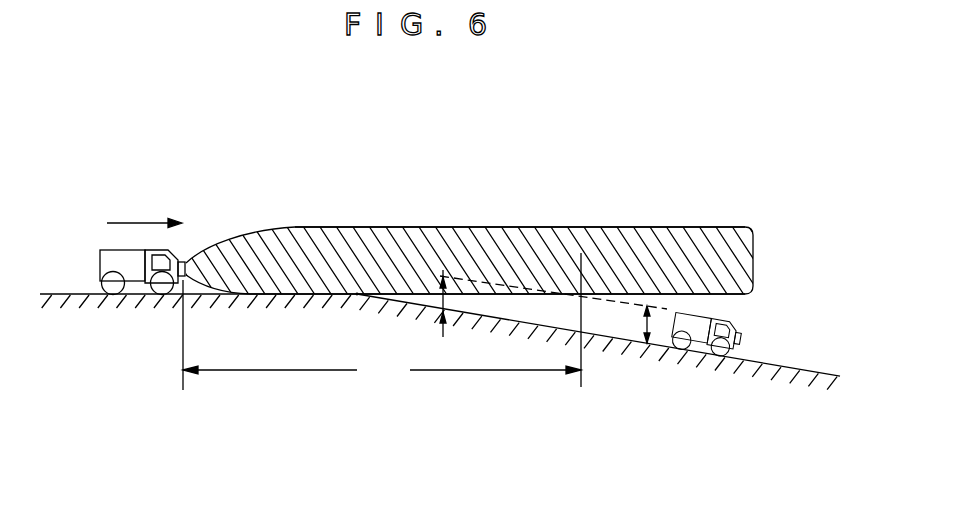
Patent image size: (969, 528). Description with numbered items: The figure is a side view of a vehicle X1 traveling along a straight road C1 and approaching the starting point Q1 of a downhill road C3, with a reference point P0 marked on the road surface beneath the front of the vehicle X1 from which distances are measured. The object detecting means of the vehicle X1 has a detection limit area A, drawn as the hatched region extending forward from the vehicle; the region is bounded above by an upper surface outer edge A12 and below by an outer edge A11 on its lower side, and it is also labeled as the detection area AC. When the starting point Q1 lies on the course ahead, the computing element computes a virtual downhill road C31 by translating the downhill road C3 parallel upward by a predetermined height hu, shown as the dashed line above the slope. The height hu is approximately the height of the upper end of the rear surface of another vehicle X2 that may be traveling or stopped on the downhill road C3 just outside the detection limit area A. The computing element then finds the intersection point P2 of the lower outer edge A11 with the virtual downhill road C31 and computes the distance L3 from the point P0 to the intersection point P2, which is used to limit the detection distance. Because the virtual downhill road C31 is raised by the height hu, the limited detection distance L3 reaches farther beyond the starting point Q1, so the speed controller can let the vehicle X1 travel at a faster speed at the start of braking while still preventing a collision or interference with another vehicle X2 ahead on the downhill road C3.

The straight road C1 is at (63, 294).
The vehicle X1 is at (138, 281).
The reference point on road surface P0 is at (186, 297).
The starting point of downhill road Q1 is at (356, 295).
The distance L3 is at (382, 372).
The detection area AC is at (390, 271).
The virtual downhill road C31 is at (487, 277).
The detection limit area A is at (560, 227).
The upper surface outer edge A12 is at (695, 227).
The outer edge on lower side A11 is at (750, 292).
The intersection point P2 is at (582, 296).
The another vehicle X2 is at (738, 324).
The downhill road C3 is at (804, 370).
The predetermined height hu is at (653, 322).